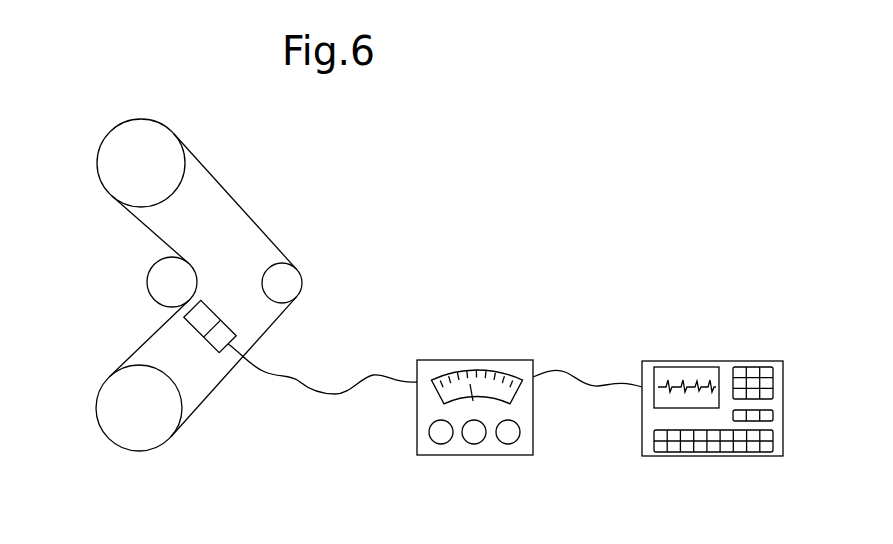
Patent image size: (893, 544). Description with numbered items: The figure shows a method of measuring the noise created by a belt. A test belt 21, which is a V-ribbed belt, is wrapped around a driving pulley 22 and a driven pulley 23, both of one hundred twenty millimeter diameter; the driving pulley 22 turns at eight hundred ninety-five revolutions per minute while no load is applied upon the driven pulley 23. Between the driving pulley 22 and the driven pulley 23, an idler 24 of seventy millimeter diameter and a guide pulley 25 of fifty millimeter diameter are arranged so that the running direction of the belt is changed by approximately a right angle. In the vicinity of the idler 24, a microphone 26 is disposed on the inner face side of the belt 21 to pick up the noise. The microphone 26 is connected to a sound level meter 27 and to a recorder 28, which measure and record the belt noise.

The test belt 21 is at (232, 198).
The driving pulley 22 is at (123, 432).
The driven pulley 23 is at (108, 171).
The idler 24 is at (155, 288).
The guide pulley 25 is at (288, 281).
The microphone 26 is at (193, 332).
The sound level meter 27 is at (483, 360).
The recorder 28 is at (708, 360).